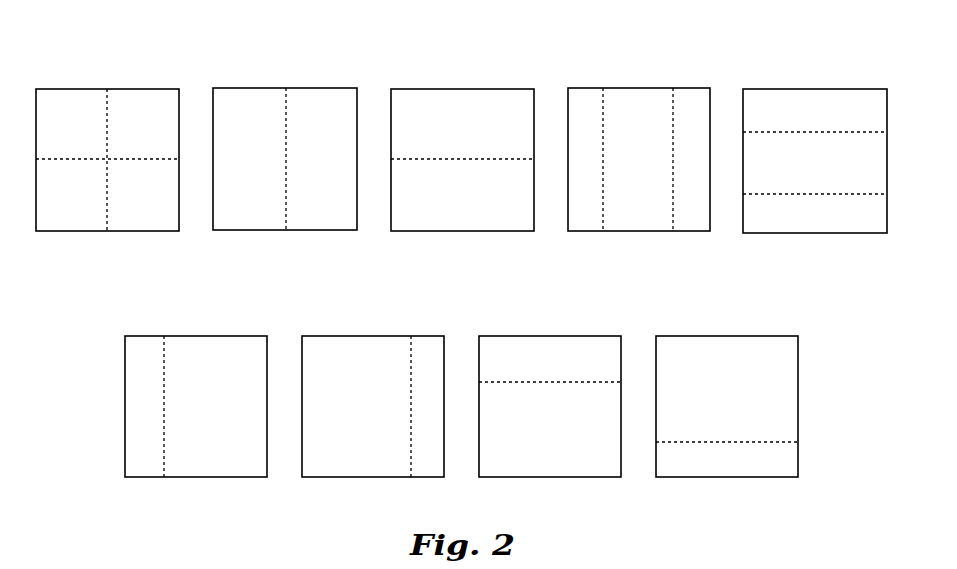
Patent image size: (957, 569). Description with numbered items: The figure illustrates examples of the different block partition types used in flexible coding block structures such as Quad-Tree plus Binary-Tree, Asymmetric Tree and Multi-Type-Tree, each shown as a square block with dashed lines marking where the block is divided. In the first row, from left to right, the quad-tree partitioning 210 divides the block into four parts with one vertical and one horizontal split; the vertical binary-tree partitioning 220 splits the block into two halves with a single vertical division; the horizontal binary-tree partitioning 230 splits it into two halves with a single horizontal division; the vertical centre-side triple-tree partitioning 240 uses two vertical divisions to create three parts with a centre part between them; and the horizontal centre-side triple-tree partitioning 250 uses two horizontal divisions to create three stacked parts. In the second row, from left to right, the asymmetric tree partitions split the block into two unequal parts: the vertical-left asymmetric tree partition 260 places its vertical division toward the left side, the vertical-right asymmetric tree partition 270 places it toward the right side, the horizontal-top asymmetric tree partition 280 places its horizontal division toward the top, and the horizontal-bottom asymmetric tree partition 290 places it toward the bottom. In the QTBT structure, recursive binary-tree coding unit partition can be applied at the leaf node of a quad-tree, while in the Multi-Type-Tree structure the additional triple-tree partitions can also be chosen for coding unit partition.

The quad-tree partitioning 210 is at (107, 59).
The vertical binary-tree partitioning 220 is at (285, 59).
The horizontal binary-tree partitioning 230 is at (462, 59).
The vertical centre-side triple-tree partitioning 240 is at (638, 59).
The horizontal centre-side triple-tree partitioning 250 is at (814, 59).
The vertical-left asymmetric tree partition 260 is at (197, 309).
The vertical-right asymmetric tree partition 270 is at (373, 309).
The horizontal-top asymmetric tree partition 280 is at (549, 309).
The horizontal-bottom asymmetric tree partition 290 is at (727, 309).